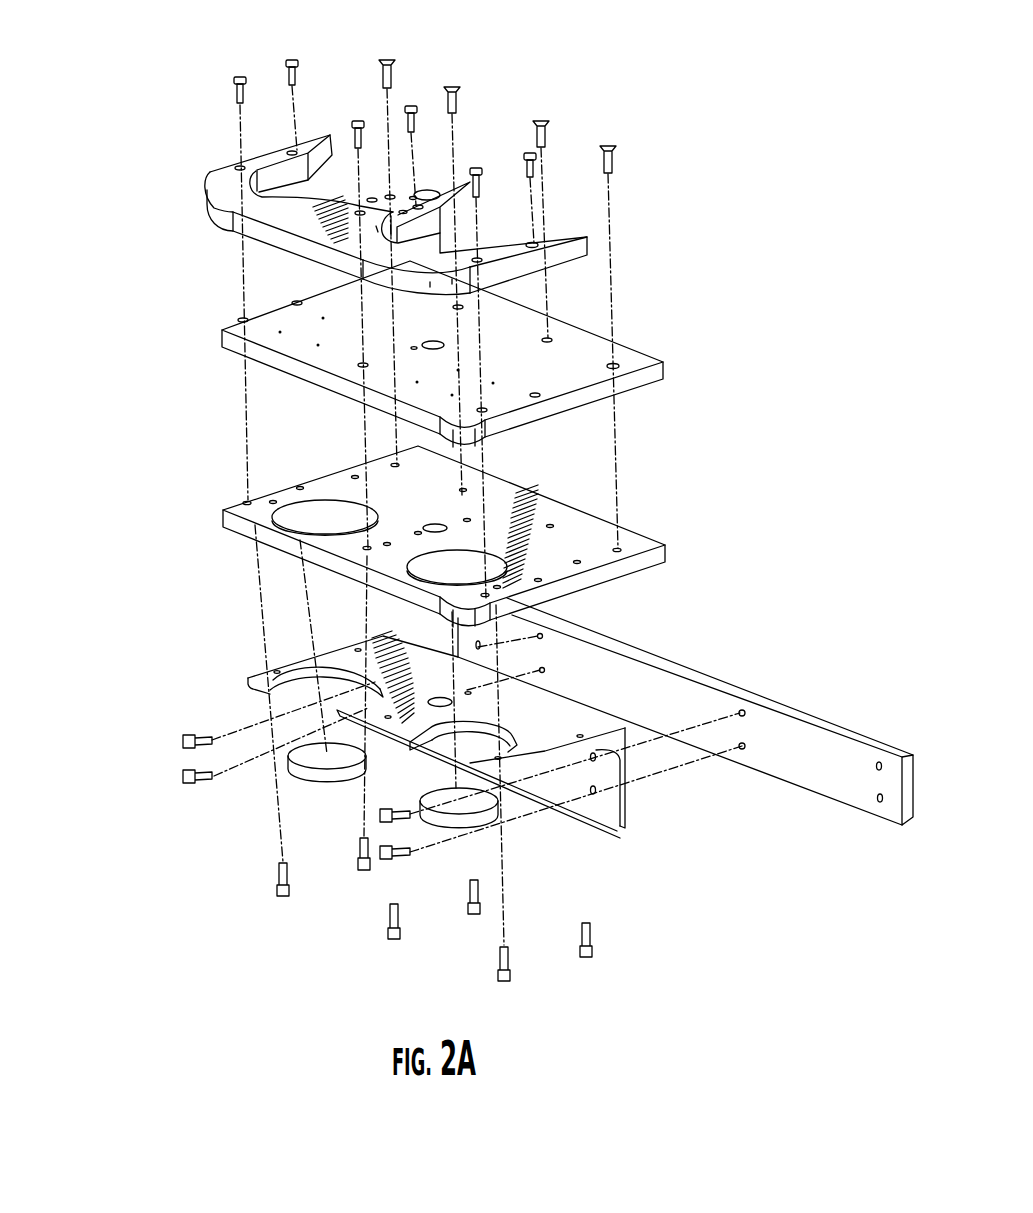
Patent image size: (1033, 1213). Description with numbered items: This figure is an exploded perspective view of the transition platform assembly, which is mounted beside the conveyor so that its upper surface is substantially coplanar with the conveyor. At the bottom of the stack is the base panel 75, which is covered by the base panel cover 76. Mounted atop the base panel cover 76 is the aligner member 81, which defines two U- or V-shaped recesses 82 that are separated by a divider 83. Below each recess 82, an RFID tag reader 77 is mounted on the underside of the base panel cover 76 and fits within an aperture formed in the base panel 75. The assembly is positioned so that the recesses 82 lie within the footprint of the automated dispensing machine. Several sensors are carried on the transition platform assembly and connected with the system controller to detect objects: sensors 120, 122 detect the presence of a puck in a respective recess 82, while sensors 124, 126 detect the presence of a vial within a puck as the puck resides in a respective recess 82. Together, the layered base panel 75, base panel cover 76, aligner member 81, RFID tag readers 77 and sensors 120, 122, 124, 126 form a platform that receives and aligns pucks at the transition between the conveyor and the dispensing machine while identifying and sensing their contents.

The base panel 75 is at (637, 547).
The base panel cover 76 is at (633, 362).
The RFID tag reader 77 is at (433, 817).
The aligner member 81 is at (300, 223).
The recess 82 is at (374, 126).
The divider 83 is at (443, 190).
The sensor 120 is at (372, 196).
The sensor 122 is at (376, 228).
The sensor 124 is at (392, 190).
The sensor 126 is at (425, 190).